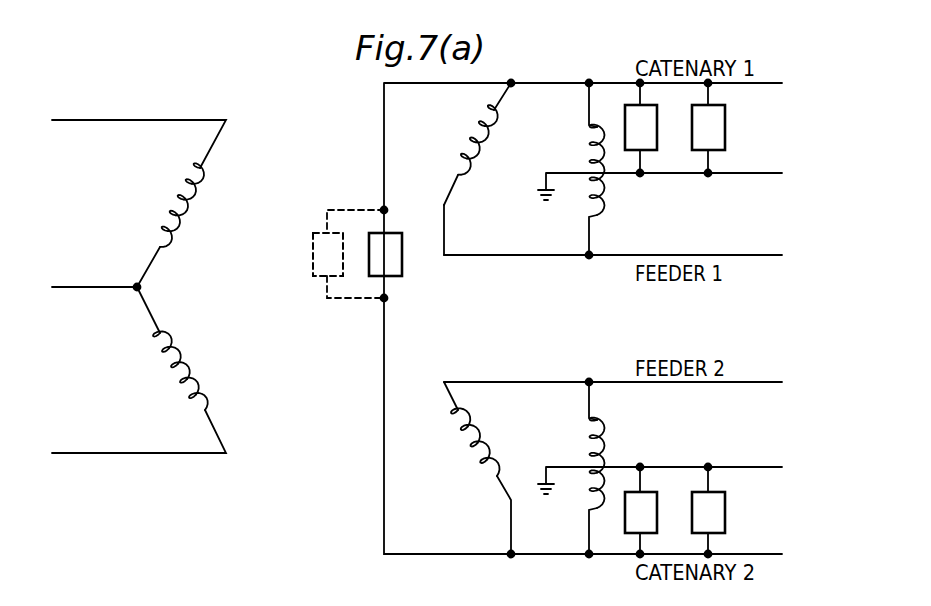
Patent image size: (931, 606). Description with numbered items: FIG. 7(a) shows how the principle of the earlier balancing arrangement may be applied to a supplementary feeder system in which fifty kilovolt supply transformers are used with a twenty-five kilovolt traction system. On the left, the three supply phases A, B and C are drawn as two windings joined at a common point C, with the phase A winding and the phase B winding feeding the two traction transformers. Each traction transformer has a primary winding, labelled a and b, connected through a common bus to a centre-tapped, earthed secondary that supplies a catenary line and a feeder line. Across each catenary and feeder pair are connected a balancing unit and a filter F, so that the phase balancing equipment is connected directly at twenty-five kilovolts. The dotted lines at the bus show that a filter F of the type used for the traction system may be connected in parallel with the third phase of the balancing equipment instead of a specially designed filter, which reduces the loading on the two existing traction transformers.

The phase A terminal A is at (139, 189).
The phase B terminal / breaker B is at (354, 318).
The phase C terminal C is at (255, 307).
The winding terminal a is at (479, 143).
The winding terminal b is at (482, 481).
The filter F is at (519, 318).